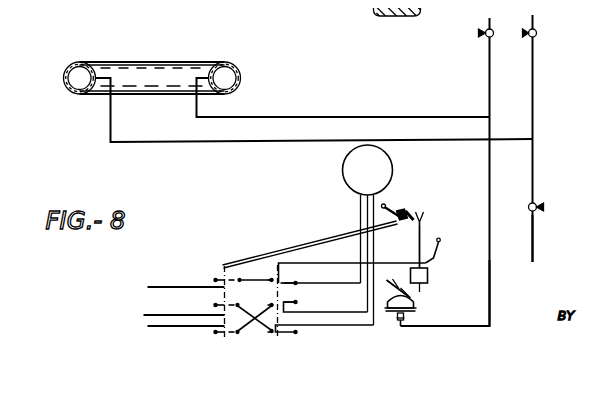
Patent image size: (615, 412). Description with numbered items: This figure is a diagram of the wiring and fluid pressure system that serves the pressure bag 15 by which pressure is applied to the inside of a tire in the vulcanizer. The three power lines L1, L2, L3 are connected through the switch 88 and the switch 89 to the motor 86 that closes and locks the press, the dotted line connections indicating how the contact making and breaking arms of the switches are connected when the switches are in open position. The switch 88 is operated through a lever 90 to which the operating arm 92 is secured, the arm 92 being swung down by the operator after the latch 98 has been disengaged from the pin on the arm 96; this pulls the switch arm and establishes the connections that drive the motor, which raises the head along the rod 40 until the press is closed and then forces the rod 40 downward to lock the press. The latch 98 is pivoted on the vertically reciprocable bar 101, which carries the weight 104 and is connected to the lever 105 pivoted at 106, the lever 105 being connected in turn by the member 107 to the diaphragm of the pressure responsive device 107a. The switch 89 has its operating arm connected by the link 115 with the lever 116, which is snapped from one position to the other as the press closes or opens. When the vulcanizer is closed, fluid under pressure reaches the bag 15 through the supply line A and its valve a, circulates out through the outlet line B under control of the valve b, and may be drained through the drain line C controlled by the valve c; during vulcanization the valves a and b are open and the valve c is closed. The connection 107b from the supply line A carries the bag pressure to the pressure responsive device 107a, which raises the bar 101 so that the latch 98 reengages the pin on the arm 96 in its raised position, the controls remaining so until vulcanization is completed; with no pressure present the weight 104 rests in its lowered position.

The pressure bag 15 is at (76, 74).
The rod 40 is at (372, 9).
The motor 86 is at (352, 178).
The switch 88 is at (223, 266).
The switch 89 is at (322, 241).
The lever 90 is at (392, 221).
The operating arm 92 is at (400, 208).
The arm 96 is at (421, 213).
The latch 98 is at (426, 216).
The vertically reciprocable bar 101 is at (416, 246).
The weight 104 is at (427, 277).
The lever 105 is at (421, 291).
The pivot 106 is at (386, 280).
The member 107 is at (404, 290).
The pressure responsive device 107a is at (396, 316).
The connection 107b is at (493, 287).
The link 115 is at (332, 263).
The lever 116 is at (440, 249).
The power line L1 is at (162, 287).
The power line L2 is at (150, 315).
The power line L3 is at (150, 328).
The supply line A is at (488, 22).
The valve a is at (485, 37).
The outlet line B is at (537, 20).
The control valve b is at (537, 33).
The drain line C is at (536, 242).
The valve c is at (528, 209).